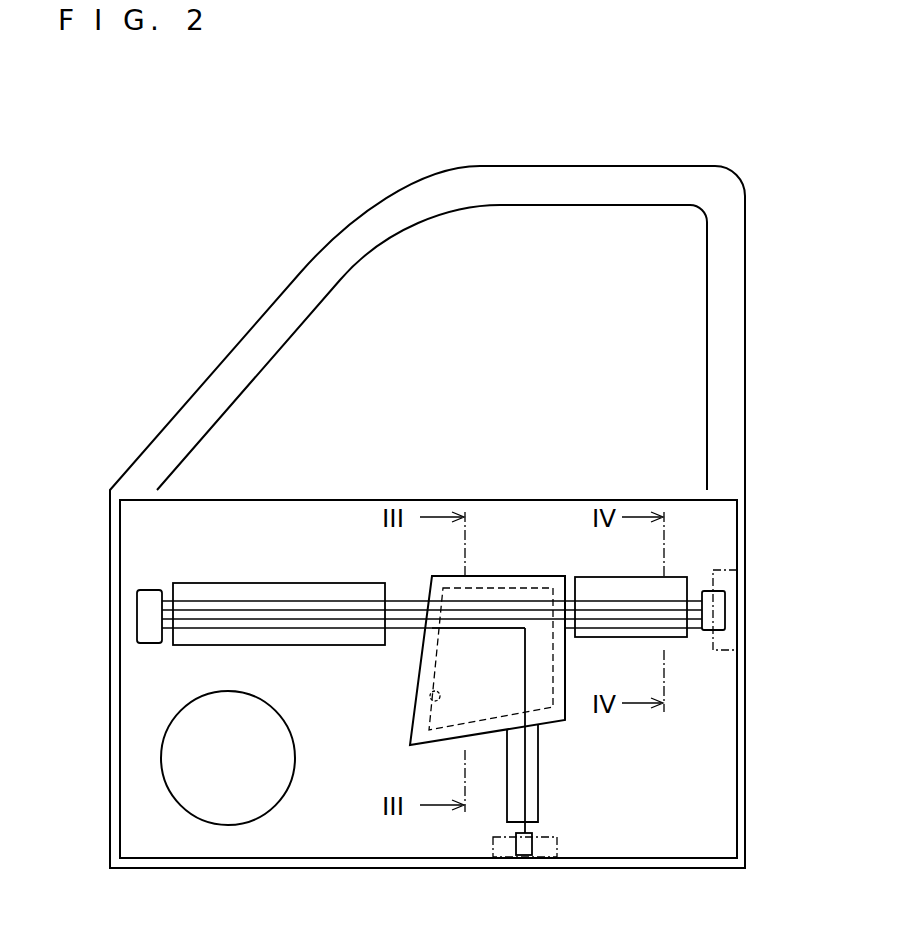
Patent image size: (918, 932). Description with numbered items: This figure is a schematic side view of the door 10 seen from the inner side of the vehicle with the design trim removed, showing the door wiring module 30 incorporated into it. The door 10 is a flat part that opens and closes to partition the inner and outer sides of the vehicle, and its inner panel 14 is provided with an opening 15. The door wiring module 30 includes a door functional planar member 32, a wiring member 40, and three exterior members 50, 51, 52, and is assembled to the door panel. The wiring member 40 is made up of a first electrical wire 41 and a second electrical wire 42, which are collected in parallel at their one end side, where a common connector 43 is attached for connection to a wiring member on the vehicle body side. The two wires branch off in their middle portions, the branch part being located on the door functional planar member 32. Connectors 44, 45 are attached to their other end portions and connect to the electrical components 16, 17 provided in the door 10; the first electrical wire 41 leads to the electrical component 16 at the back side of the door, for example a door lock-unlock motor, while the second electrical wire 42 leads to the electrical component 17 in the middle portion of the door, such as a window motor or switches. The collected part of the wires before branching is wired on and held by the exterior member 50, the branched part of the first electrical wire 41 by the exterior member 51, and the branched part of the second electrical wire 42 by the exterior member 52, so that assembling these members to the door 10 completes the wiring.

The door 10 is at (183, 177).
The inner panel 14 is at (718, 766).
The opening 15 is at (430, 697).
The electrical component 16 is at (713, 650).
The electrical component 17 is at (562, 843).
The door wiring module 30 is at (570, 724).
The door functional planar member 32 is at (409, 728).
The wiring member 40 is at (432, 566).
The first electrical wire 41 is at (296, 624).
The second electrical wire 42 is at (340, 630).
The common connector 43 is at (150, 590).
The connector 44 is at (707, 591).
The connector 45 is at (517, 847).
The exterior member 50 is at (207, 583).
The exterior member 51 is at (580, 577).
The exterior member 52 is at (539, 800).